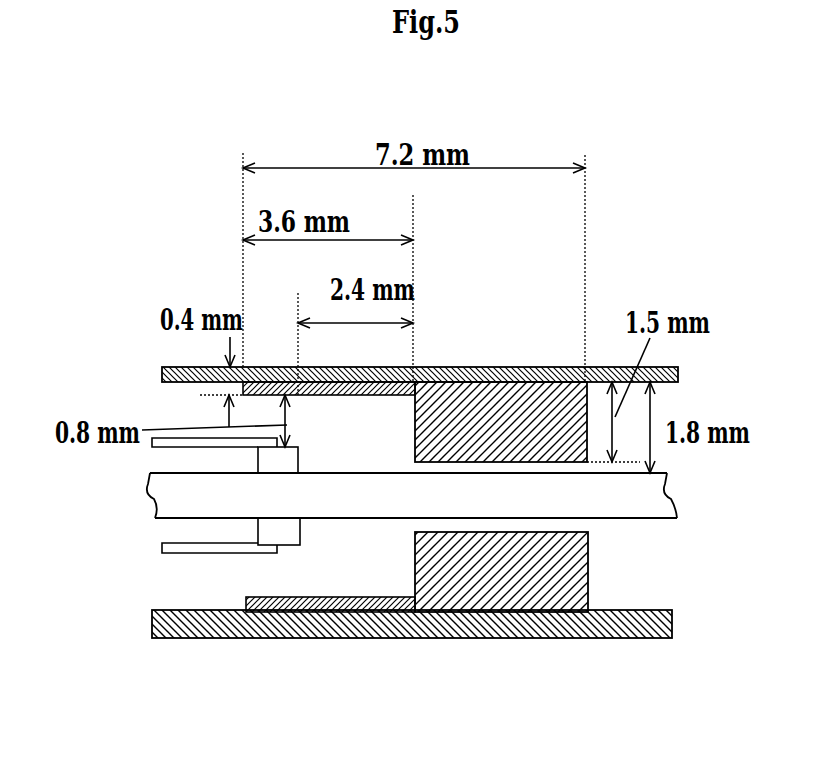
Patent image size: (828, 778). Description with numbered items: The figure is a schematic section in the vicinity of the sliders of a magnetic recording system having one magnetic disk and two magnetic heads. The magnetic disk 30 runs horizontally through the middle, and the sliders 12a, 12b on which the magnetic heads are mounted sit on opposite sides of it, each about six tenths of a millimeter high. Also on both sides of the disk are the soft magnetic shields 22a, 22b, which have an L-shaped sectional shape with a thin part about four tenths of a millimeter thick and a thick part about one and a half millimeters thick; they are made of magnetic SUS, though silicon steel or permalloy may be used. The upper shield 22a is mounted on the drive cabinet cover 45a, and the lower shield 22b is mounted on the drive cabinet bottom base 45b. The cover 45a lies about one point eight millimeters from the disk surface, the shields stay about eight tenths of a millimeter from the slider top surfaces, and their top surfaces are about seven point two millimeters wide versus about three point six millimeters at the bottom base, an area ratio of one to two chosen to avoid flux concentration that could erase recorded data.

The drive cabinet cover 45a is at (163, 370).
The drive cabinet bottom base 45b is at (152, 622).
The soft magnetic shield 22a is at (540, 400).
The soft magnetic shield 22b is at (433, 613).
The slider 12a is at (272, 458).
The slider 12b is at (280, 537).
The magnetic disk 30 is at (653, 497).